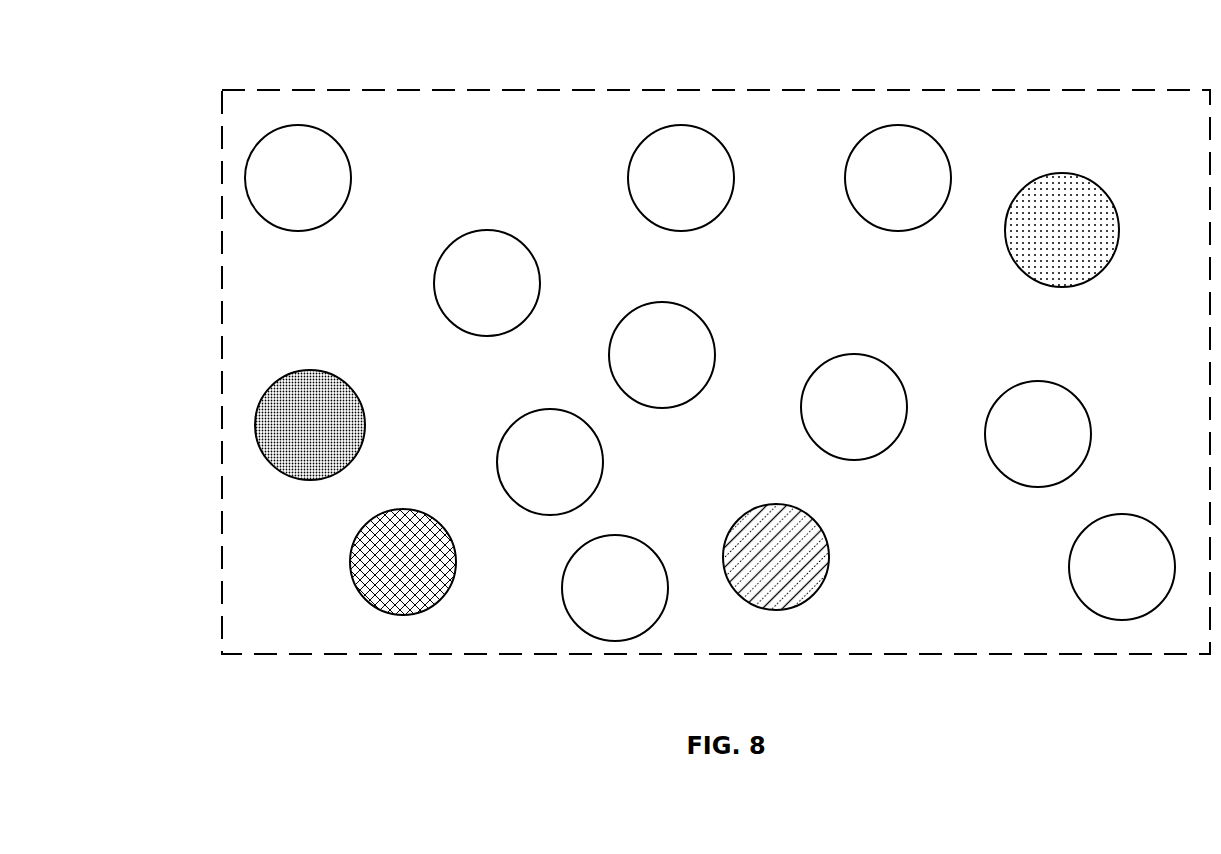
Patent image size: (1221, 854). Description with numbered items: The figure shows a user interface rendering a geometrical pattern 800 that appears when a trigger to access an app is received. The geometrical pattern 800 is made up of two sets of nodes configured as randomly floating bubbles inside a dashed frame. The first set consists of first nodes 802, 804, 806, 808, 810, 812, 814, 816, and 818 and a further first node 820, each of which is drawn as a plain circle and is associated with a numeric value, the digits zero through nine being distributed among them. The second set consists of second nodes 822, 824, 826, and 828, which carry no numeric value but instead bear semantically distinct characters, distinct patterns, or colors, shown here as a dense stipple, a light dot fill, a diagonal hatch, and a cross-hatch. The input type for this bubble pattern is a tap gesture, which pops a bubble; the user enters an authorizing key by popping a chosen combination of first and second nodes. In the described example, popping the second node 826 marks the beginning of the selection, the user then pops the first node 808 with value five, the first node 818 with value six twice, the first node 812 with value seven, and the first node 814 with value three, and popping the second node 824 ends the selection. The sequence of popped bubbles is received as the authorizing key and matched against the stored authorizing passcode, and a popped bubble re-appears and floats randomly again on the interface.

The geometrical pattern 800 is at (225, 82).
The first node 802 is at (298, 178).
The first node 804 is at (550, 462).
The first node 806 is at (487, 283).
The first node 808 is at (898, 178).
The first node 810 is at (615, 588).
The first node 812 is at (1038, 434).
The first node 814 is at (662, 355).
The first node 816 is at (681, 178).
The first node 818 is at (854, 407).
The first node 820 is at (1122, 567).
The second node 822 is at (310, 425).
The second node 824 is at (1062, 230).
The second node 826 is at (776, 557).
The second node 828 is at (403, 562).